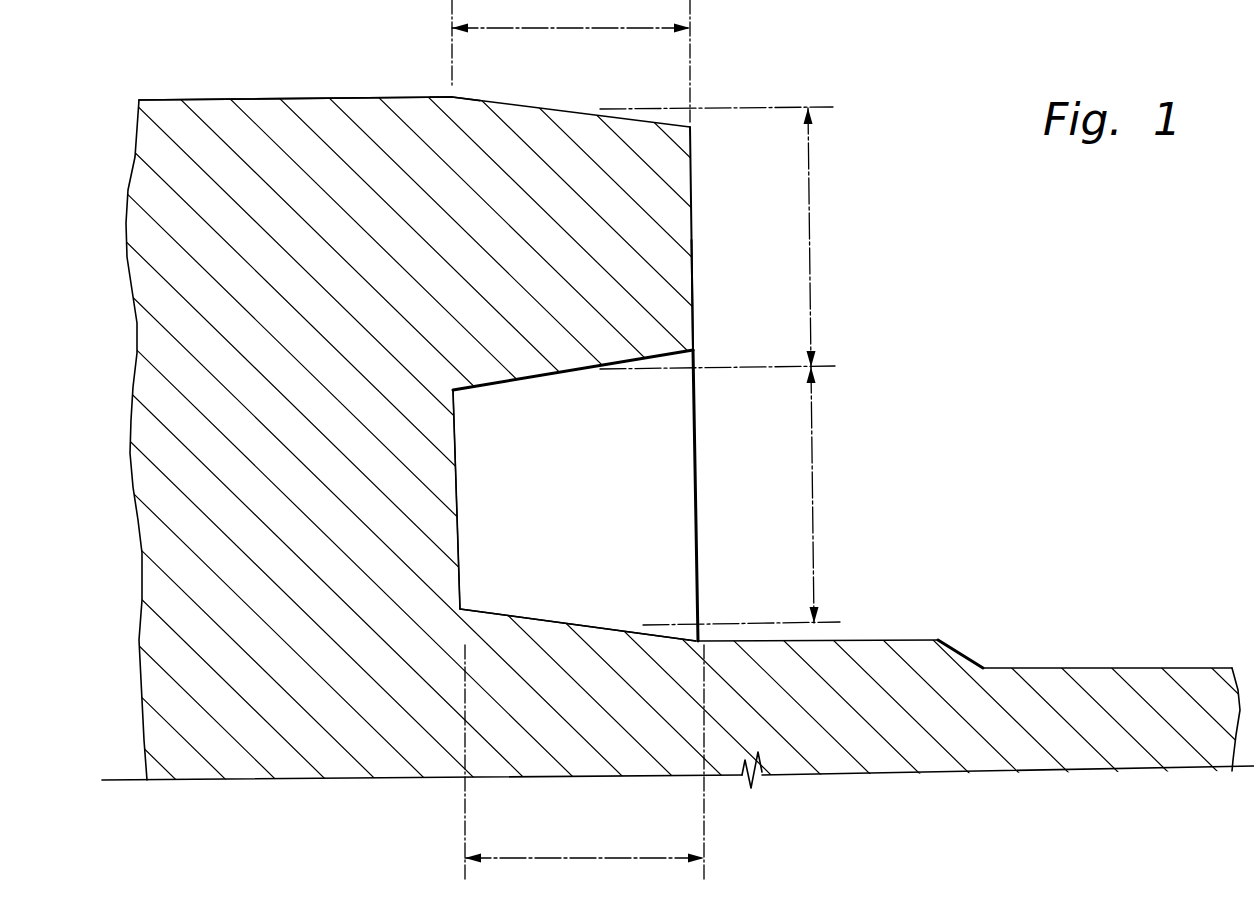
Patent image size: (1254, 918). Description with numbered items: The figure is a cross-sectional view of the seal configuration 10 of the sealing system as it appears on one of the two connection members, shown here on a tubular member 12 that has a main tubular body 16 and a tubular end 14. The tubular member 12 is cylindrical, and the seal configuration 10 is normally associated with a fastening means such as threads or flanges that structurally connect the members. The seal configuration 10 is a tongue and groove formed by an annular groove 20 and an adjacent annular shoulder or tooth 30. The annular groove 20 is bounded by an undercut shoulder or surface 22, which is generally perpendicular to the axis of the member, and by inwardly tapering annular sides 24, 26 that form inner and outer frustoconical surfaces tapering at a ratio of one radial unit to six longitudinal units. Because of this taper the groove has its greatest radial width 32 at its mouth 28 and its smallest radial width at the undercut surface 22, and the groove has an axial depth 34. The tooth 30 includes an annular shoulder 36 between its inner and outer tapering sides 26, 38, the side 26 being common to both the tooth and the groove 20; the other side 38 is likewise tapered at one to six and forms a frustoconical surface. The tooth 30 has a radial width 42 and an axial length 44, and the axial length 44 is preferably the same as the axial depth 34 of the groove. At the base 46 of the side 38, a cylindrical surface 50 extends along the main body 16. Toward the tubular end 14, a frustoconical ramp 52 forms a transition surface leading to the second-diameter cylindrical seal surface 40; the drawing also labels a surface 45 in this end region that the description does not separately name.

The seal configuration 10 is at (917, 321).
The tubular member 12 is at (378, 120).
The tubular end 14 is at (1177, 700).
The main tubular body 16 is at (226, 115).
The annular groove 20 is at (604, 503).
The undercut shoulder or surface 22 is at (461, 493).
The inner tapering annular side 24 is at (545, 620).
The outer tapering annular side 26 is at (525, 380).
The mouth of groove 28 is at (702, 642).
The annular shoulder or tooth 30 is at (680, 182).
The greatest radial width of groove 32 is at (814, 500).
The axial depth of groove 34 is at (578, 856).
The annular shoulder of tooth 36 is at (694, 237).
The outer tapering side of tooth 38 is at (557, 108).
The cylindrical seal surface 40 is at (910, 640).
The radial width of tooth 42 is at (811, 244).
The axial length of tooth 44 is at (563, 28).
The lower surface 45 is at (1093, 667).
The base of tooth side 46 is at (453, 93).
The cylindrical surface 50 is at (306, 97).
The frustoconical ramp 52 is at (962, 652).